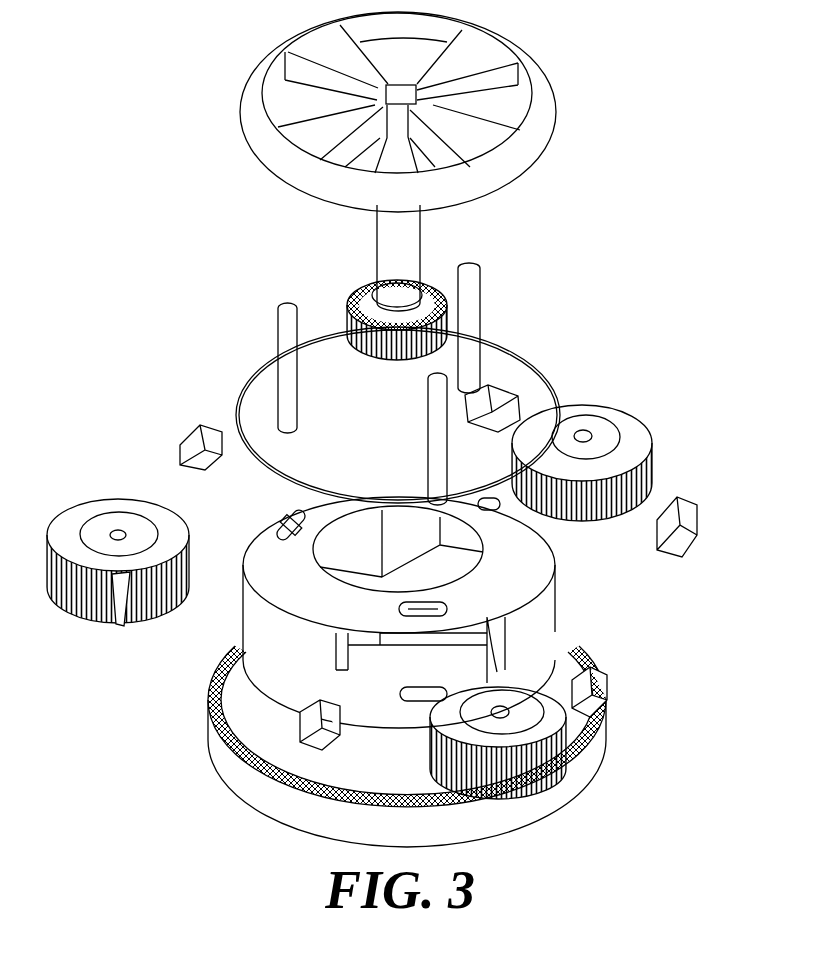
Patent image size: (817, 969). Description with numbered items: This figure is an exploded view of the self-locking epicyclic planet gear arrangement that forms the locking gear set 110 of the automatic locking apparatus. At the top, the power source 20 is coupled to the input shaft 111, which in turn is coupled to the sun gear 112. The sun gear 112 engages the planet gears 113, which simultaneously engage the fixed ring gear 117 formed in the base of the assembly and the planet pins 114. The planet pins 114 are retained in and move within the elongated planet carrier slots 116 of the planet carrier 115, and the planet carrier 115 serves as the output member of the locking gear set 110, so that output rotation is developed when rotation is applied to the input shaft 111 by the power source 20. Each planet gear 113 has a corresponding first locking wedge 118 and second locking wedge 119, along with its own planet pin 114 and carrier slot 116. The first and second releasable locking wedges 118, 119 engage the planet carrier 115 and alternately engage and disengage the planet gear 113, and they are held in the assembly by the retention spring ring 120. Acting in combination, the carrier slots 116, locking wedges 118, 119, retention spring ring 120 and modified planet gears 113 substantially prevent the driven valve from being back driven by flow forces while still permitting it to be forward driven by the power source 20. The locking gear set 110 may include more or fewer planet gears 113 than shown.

The power source 20 is at (538, 123).
The locking gear set 110 is at (552, 342).
The input shaft 111 is at (405, 247).
The sun gear 112 is at (448, 305).
The planet gear 113 is at (602, 440).
The planet pin 114 is at (280, 403).
The planet carrier 115 is at (533, 622).
The planet carrier slot 116 is at (285, 525).
The fixed ring gear 117 is at (213, 677).
The first locking wedge 118 is at (293, 733).
The second locking wedge 119 is at (607, 688).
The retention spring ring 120 is at (440, 230).